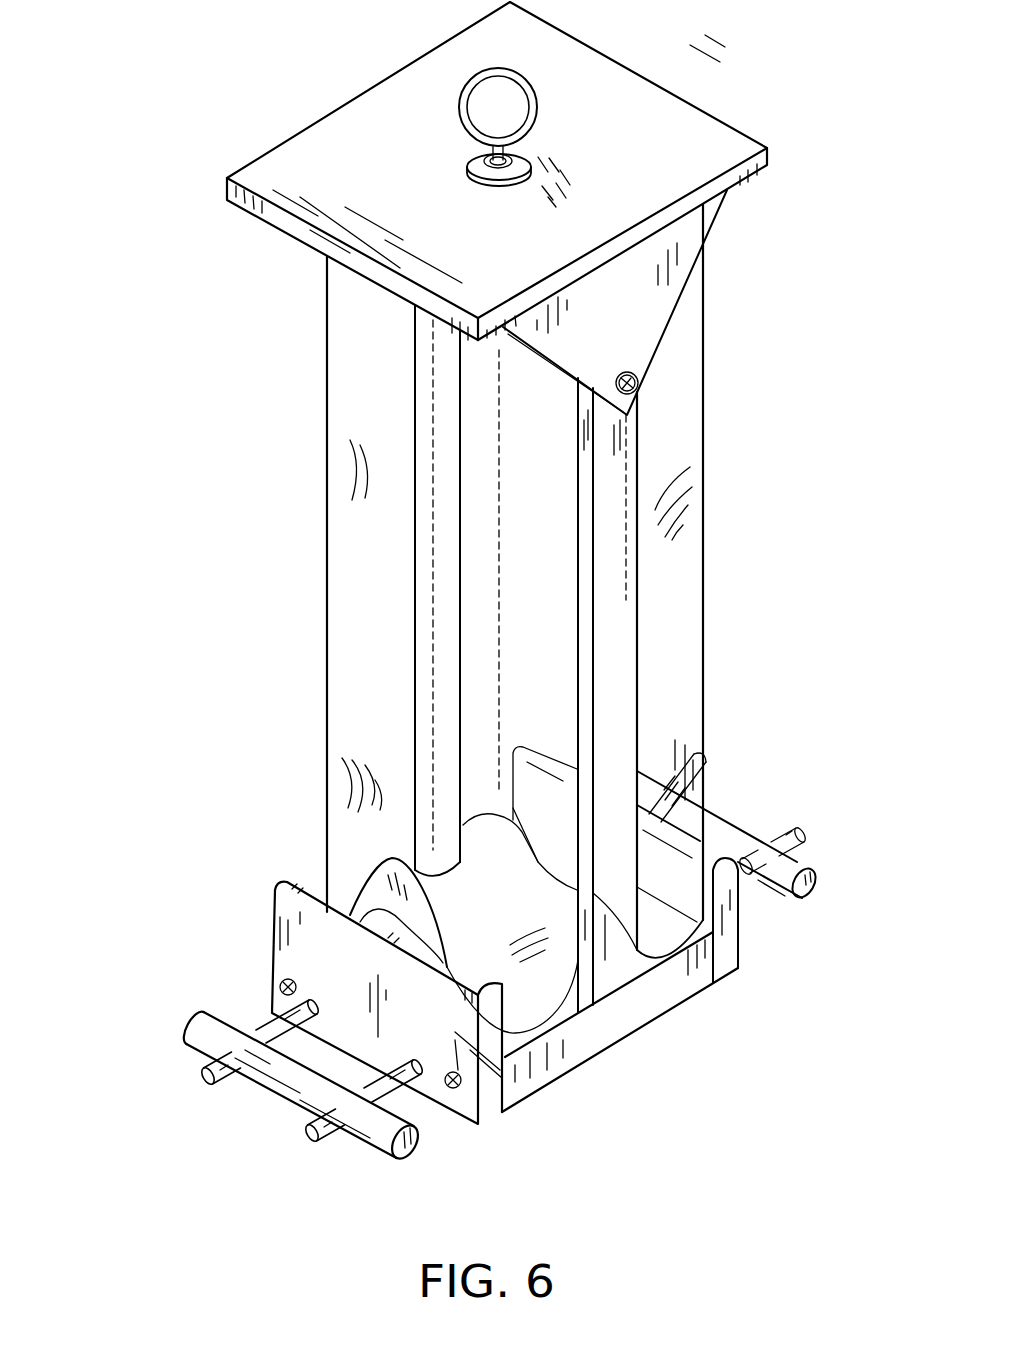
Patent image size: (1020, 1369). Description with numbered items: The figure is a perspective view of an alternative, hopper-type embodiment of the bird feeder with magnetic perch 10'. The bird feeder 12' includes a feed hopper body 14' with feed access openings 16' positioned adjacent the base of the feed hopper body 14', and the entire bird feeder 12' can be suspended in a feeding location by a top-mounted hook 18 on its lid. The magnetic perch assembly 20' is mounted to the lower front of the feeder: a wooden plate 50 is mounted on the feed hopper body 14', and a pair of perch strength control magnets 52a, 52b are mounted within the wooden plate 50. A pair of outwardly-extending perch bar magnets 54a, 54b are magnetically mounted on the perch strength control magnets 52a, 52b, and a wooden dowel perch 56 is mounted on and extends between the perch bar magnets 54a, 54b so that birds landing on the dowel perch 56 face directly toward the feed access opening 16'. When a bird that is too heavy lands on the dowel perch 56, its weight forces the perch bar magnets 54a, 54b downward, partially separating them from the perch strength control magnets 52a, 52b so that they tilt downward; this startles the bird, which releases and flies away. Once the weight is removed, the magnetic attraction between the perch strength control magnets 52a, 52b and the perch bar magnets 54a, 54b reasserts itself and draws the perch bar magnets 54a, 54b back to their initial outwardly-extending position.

The bird feeder with magnetic perch 10' is at (561, 208).
The bird feeder 12' is at (737, 581).
The feed hopper body 14' is at (304, 584).
The feed access openings 16' is at (489, 676).
The top-mounted hook 18 is at (533, 88).
The magnetic perch assembly 20' is at (545, 1056).
The wooden plate 50 is at (453, 1037).
The perch strength control magnet 52a is at (307, 1000).
The perch strength control magnet 52b is at (423, 1080).
The perch bar magnet 54a is at (230, 1083).
The perch bar magnet 54b is at (327, 1143).
The wooden dowel perch 56 is at (197, 1027).